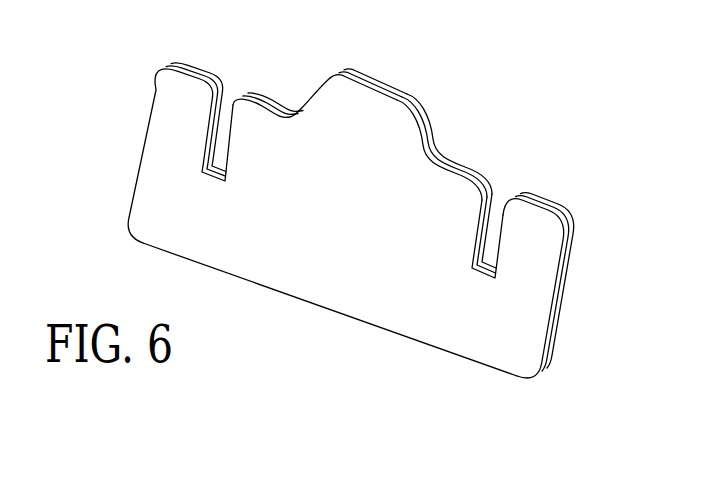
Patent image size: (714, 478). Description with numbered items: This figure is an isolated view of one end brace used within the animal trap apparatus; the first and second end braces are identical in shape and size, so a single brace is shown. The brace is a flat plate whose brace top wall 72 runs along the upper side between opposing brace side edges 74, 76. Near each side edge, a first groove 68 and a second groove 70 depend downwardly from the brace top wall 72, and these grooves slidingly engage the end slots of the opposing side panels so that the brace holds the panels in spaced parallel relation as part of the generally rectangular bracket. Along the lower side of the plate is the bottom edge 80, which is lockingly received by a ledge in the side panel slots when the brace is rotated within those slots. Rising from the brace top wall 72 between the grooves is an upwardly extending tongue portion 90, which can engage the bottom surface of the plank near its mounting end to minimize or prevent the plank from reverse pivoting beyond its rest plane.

The brace side edge 74 is at (143, 129).
The first groove 68 is at (226, 111).
The brace top wall 72 is at (279, 102).
The tongue portion 90 is at (380, 82).
The second groove 70 is at (498, 206).
The brace side edge 76 is at (571, 283).
The bottom edge 80 is at (367, 322).